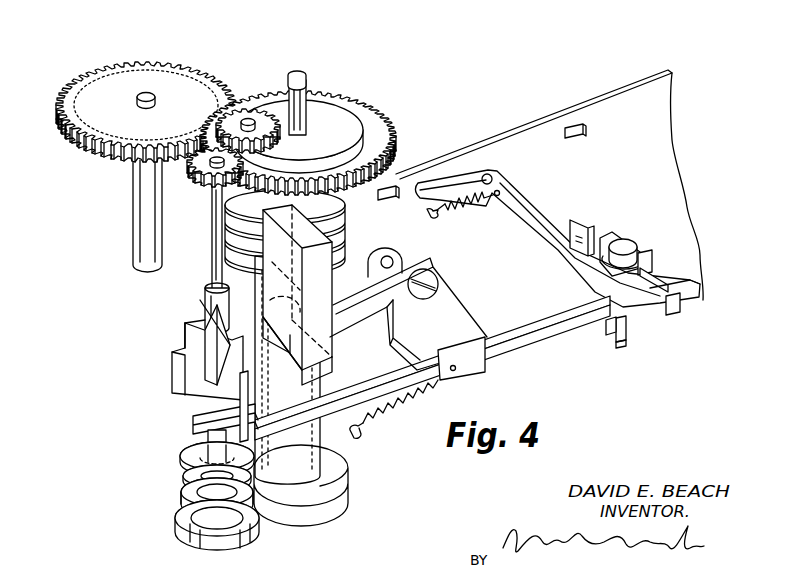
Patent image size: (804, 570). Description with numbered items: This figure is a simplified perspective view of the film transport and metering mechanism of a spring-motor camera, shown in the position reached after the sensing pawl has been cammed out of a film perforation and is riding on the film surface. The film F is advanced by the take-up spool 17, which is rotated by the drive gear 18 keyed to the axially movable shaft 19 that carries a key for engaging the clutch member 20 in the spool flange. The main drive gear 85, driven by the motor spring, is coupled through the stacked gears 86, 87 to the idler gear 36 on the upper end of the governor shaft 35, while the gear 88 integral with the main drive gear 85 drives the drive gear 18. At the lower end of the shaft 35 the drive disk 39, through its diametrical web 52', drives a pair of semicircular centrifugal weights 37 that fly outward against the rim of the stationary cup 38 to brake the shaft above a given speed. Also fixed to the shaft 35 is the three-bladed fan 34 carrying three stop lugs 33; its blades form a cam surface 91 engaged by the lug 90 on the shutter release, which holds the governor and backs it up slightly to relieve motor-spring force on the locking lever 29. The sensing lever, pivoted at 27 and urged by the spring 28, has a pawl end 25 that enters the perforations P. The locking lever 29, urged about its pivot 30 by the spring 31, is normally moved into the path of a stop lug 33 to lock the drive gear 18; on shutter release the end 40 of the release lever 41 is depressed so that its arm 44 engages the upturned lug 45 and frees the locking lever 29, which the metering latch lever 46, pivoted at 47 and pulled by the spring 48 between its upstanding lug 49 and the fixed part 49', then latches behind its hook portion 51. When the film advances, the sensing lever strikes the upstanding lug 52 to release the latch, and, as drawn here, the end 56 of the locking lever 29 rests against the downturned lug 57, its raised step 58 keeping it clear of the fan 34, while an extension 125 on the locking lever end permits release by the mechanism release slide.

The film F is at (665, 101).
The film perforations P is at (386, 195).
The take-up spool 17 is at (283, 469).
The drive gear 18 is at (375, 125).
The axially movable shaft 19 is at (301, 120).
The clutch member 20 is at (240, 214).
The pawl end 25 is at (425, 191).
The pivot 27 is at (489, 177).
The spring 28 is at (462, 202).
The locking lever 29 is at (531, 327).
The pivot 30 is at (389, 257).
The spring 31 is at (395, 412).
The stop lugs 33 is at (172, 368).
The fan 34 is at (203, 326).
The shaft 35 is at (214, 239).
The idler gear 36 is at (193, 173).
The centrifugal weights 37 is at (195, 508).
The stationary cup 38 is at (185, 535).
The drive disk 39 is at (190, 452).
The end of release lever 40 is at (320, 376).
The release lever 41 is at (355, 307).
The arm 44 is at (408, 378).
The upturned lug 45 is at (470, 361).
The metering latch lever 46 is at (663, 283).
The pivot 47 is at (628, 248).
The spring 48 is at (603, 246).
The upstanding lug 49 is at (657, 260).
The fixed part 49' is at (592, 226).
The hook portion 51 is at (693, 282).
The upstanding lug 52 is at (690, 314).
The web 52' is at (194, 478).
The end of locking lever 56 is at (620, 342).
The downturned lug 57 is at (632, 337).
The raised step 58 is at (611, 327).
The main drive gear 85 is at (140, 81).
The stacked gear 86 is at (248, 112).
The stacked gear 87 is at (283, 137).
The gear 88 is at (107, 86).
The lug 90 is at (216, 263).
The cam surface 91 is at (222, 367).
The extension 125 is at (195, 423).